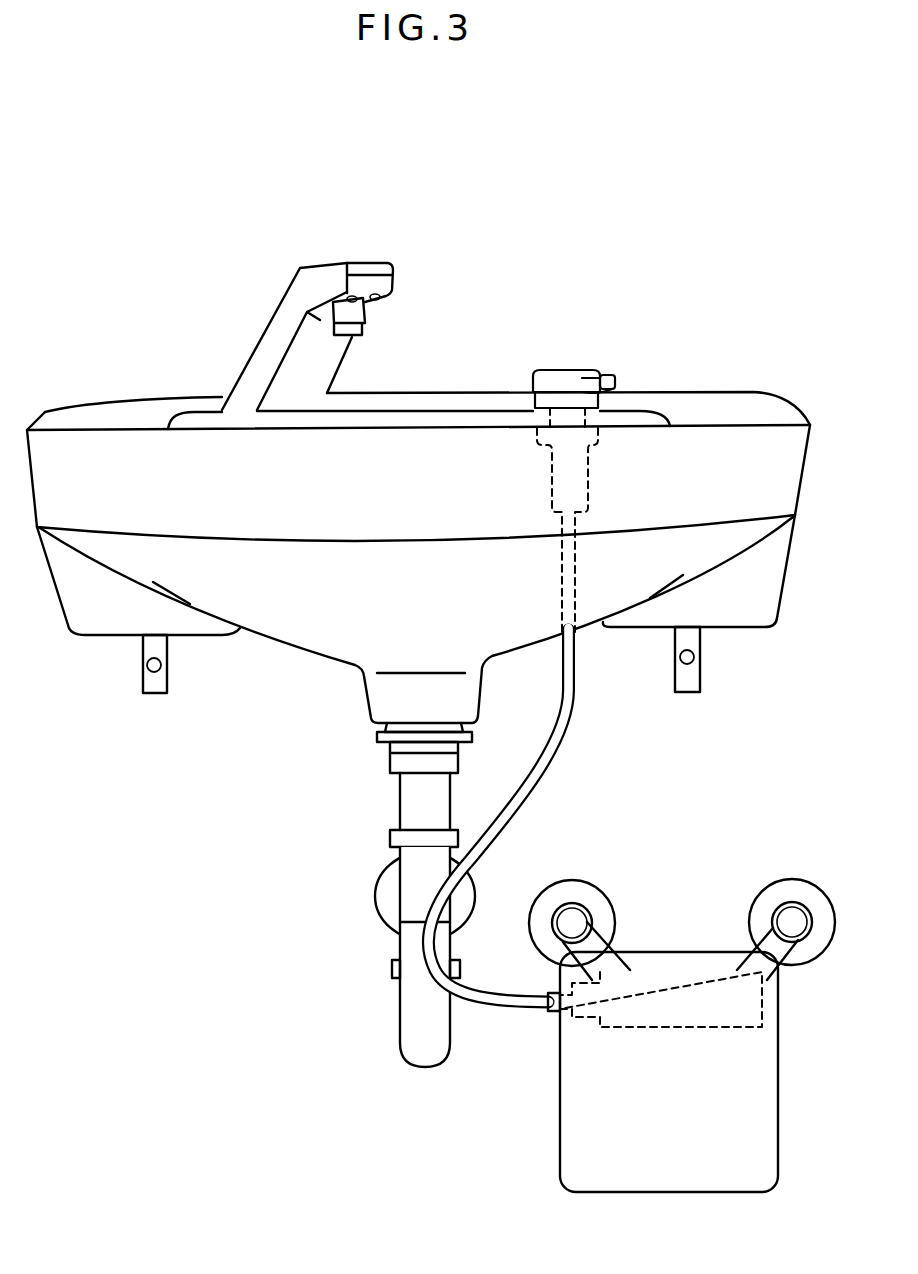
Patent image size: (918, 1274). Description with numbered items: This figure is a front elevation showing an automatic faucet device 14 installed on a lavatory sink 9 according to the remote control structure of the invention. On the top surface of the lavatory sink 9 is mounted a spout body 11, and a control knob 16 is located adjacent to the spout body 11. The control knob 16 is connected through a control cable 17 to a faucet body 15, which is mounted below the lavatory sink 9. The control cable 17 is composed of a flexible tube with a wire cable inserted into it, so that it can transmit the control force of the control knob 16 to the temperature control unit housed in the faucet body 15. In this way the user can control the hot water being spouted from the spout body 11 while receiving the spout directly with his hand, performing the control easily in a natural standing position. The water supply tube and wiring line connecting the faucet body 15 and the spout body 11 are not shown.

The lavatory sink 9 is at (97, 400).
The spout body 11 is at (345, 264).
The automatic faucet device 14 is at (413, 289).
The faucet body 15 is at (662, 973).
The control knob 16 is at (610, 376).
The control cable 17 is at (560, 732).